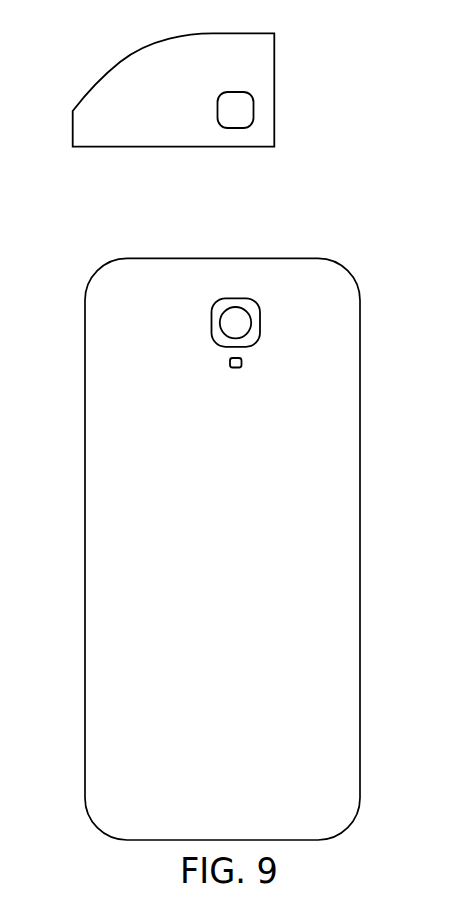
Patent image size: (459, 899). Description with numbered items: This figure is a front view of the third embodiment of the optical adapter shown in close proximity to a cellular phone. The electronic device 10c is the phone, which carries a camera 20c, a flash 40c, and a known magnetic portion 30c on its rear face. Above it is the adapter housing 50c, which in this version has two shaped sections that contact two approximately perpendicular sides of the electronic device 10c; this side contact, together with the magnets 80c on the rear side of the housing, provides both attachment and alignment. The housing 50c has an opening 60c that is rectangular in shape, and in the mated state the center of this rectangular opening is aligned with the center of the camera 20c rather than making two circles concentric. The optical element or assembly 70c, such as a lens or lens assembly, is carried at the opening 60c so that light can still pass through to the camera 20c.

The electronic device 10c is at (333, 590).
The camera 20c is at (251, 323).
The magnetic portion 30c is at (236, 280).
The flash 40c is at (242, 363).
The housing 50c is at (255, 33).
The opening 60c is at (250, 97).
The optical element or assembly 70c is at (240, 108).
The magnet 80c is at (218, 68).